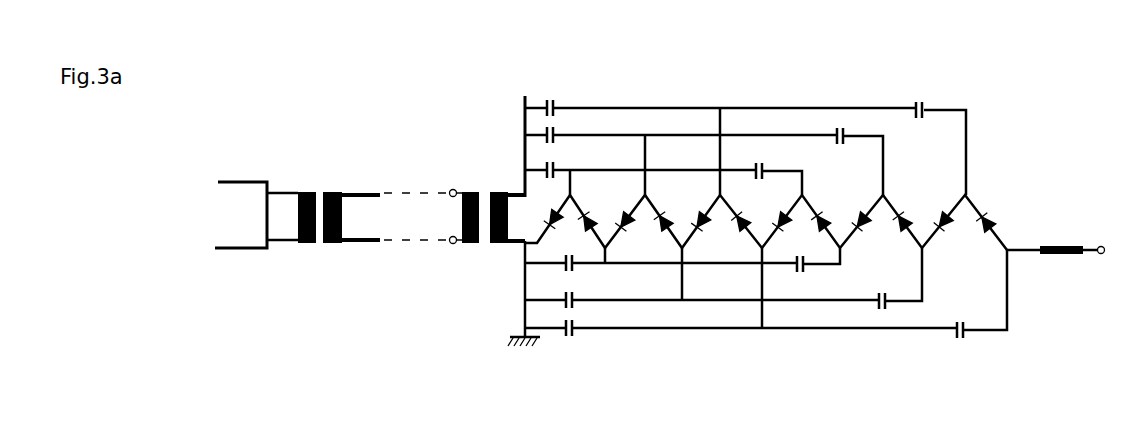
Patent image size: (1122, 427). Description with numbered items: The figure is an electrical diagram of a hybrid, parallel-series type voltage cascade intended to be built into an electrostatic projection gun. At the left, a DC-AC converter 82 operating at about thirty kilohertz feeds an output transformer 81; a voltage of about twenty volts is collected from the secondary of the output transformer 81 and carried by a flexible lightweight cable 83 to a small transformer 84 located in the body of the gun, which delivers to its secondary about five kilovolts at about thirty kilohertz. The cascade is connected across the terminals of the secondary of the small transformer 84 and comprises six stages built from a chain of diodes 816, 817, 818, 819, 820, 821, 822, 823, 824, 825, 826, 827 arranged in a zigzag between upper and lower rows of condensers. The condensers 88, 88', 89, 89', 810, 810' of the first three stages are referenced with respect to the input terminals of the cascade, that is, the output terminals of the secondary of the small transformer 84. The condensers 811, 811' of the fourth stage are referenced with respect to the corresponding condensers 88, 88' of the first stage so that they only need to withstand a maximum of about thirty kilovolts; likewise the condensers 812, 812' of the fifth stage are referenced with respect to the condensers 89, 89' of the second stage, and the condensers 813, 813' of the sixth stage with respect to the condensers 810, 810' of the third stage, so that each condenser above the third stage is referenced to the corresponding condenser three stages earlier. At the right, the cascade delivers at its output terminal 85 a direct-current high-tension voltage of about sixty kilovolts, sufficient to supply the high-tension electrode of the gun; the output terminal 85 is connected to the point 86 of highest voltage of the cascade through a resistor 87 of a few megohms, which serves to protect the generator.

The output transformer 81 is at (318, 194).
The DC-AC converter 82 is at (232, 192).
The flexible lightweight cable 83 is at (362, 225).
The small transformer 84 is at (483, 247).
The output terminal 85 is at (1100, 246).
The point of highest voltage 86 is at (1012, 246).
The resistor 87 is at (1062, 258).
The condenser 88 is at (586, 316).
The condenser 89 is at (567, 349).
The condenser 810 is at (549, 348).
The condenser 811 is at (781, 316).
The condenser 812 is at (898, 350).
The condenser 813 is at (960, 349).
The condenser 88' is at (588, 106).
The condenser 89' is at (570, 107).
The condenser 810' is at (539, 75).
The condenser 811' is at (777, 106).
The condenser 812' is at (816, 108).
The condenser 813' is at (908, 95).
The diode 816 is at (562, 228).
The diode 817 is at (590, 212).
The diode 818 is at (634, 232).
The diode 819 is at (665, 212).
The diode 820 is at (708, 215).
The diode 821 is at (742, 212).
The diode 822 is at (826, 235).
The diode 823 is at (830, 215).
The diode 824 is at (866, 232).
The diode 825 is at (903, 215).
The diode 826 is at (952, 225).
The diode 827 is at (990, 222).